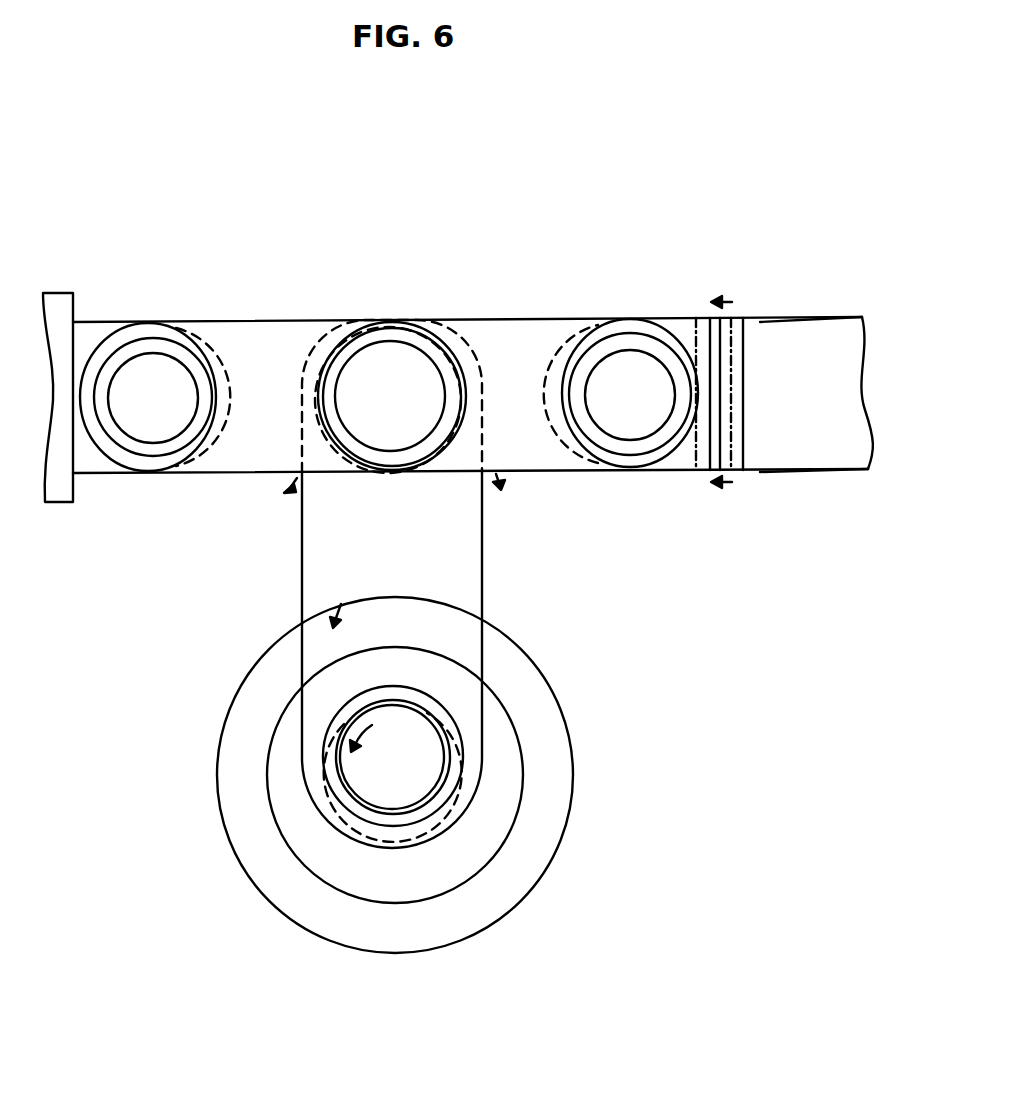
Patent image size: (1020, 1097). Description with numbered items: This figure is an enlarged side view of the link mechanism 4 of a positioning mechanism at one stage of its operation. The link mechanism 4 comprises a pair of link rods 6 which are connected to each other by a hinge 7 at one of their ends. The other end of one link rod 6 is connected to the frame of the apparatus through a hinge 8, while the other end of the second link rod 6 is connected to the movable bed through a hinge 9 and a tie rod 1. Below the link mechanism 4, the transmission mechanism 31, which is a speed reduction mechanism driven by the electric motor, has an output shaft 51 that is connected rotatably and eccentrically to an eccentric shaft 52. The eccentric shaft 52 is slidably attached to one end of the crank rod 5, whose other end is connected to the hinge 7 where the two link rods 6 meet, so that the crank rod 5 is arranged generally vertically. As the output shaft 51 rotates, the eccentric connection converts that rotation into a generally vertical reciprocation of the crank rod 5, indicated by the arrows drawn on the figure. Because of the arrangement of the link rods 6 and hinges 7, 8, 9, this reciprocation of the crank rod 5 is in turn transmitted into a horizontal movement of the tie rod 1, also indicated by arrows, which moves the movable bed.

The tie rod 1 is at (792, 360).
The link mechanism 4 is at (317, 320).
The crank rod 5 is at (343, 552).
The link rod 6 is at (263, 343).
The hinge 7 is at (393, 320).
The hinge 8 is at (95, 363).
The hinge 9 is at (681, 360).
The transmission mechanism 31 is at (245, 767).
The output shaft 51 is at (453, 822).
The eccentric shaft 52 is at (437, 699).